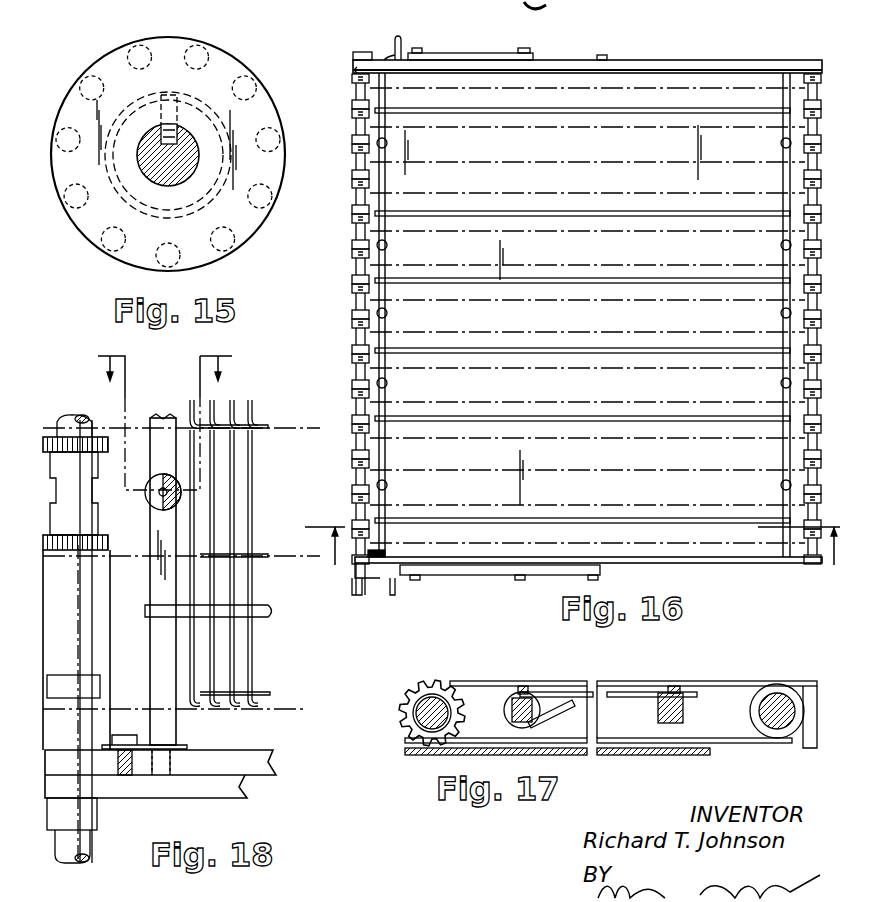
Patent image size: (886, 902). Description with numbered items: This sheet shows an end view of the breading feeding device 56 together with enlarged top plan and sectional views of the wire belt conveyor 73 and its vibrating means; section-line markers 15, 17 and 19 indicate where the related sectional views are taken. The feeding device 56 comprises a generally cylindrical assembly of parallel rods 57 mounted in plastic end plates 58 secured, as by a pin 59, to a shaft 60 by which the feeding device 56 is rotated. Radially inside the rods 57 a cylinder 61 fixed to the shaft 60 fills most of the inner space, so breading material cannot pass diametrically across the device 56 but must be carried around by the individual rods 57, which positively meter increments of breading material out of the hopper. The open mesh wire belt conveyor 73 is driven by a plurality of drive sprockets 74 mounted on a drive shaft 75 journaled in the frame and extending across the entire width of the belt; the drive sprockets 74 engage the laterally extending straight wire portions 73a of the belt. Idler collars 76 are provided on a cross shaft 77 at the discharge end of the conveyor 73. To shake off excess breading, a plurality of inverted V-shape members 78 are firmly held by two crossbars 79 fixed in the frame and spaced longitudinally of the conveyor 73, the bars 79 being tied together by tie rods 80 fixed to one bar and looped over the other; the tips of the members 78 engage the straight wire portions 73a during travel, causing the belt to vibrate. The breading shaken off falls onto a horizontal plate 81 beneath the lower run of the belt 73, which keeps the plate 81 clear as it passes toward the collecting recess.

In FIG. 15, the feeding device 56 is at (109, 49).
In FIG. 15, the parallel rods 57 is at (272, 124).
In FIG. 15, the plastic end plates 58 is at (224, 56).
In FIG. 15, the pin 59 is at (193, 110).
In FIG. 15, the shaft 60 is at (197, 163).
In FIG. 15, the cylinder 61 is at (112, 184).
In FIG. 16, the open mesh wire belt conveyor 73 is at (713, 90).
In FIG. 18, the open mesh wire belt conveyor 73 is at (280, 712).
In FIG. 17, the open mesh wire belt conveyor 73 is at (480, 681).
In FIG. 18, the laterally extending straight wire portions 73a is at (232, 497).
In FIG. 16, the drive sprockets 74 is at (352, 274).
In FIG. 18, the drive sprockets 74 is at (45, 447).
In FIG. 17, the drive sprockets 74 is at (413, 690).
In FIG. 18, the drive shaft 75 is at (88, 615).
In FIG. 17, the drive shaft 75 is at (420, 716).
In FIG. 16, the idler collars 76 is at (820, 97).
In FIG. 17, the idler collars 76 is at (785, 684).
In FIG. 16, the cross shaft 77 is at (806, 452).
In FIG. 17, the cross shaft 77 is at (775, 724).
In FIG. 16, the inverted V-shape members 78 is at (783, 144).
In FIG. 17, the inverted V-shape members 78 is at (525, 682).
In FIG. 16, the crossbars 79 is at (385, 462).
In FIG. 17, the crossbars 79 is at (516, 712).
In FIG. 16, the tie rods 80 is at (650, 216).
In FIG. 17, the tie rods 80 is at (635, 692).
In FIG. 17, the horizontal plate 81 is at (645, 757).
In FIG. 16, the section line for Fig. 15 is at (357, 178).
In FIG. 16, the section line for Fig. 17 is at (571, 567).
In FIG. 18, the section line for Fig. 19 is at (158, 423).